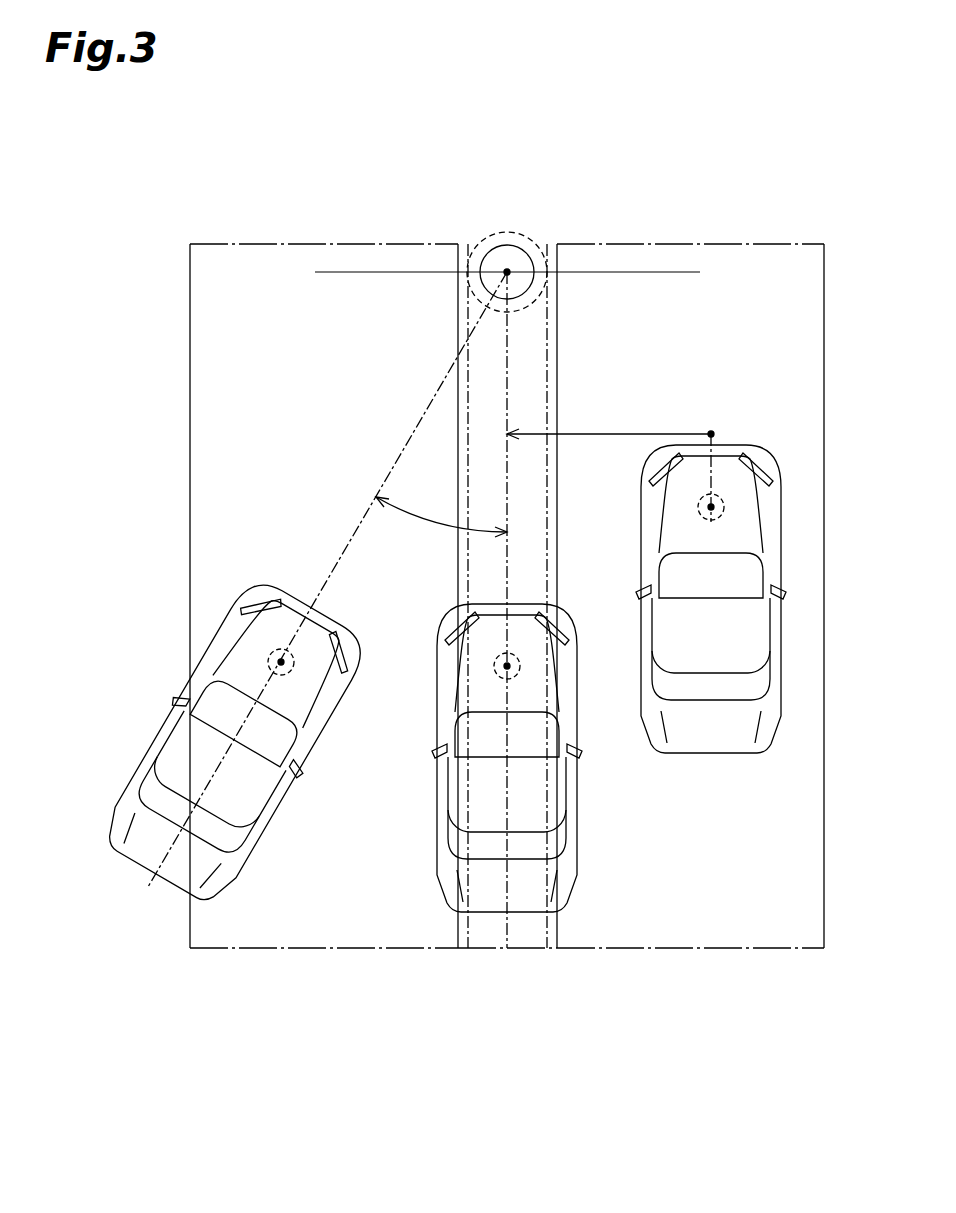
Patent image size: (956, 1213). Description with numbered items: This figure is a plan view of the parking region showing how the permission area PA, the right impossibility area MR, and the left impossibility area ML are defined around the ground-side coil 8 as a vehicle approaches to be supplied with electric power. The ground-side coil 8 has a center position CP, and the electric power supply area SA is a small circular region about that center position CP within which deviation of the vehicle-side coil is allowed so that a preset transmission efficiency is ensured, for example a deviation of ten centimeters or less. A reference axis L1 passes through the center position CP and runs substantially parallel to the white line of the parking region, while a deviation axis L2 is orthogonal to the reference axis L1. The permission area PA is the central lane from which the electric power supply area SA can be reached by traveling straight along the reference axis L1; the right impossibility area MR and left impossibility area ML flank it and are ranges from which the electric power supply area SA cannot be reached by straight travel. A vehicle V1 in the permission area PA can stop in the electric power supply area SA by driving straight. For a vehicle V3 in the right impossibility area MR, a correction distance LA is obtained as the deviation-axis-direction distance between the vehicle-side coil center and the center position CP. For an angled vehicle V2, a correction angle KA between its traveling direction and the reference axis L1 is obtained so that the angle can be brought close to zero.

The ground-side coil 8 is at (484, 256).
The electric power supply area SA is at (501, 232).
The center position CP is at (513, 266).
The reference axis L1 is at (505, 410).
The deviation axis L2 is at (338, 276).
The correction distance LA is at (618, 430).
The correction angle KA is at (436, 530).
The vehicle V1 is at (436, 688).
The vehicle V2 is at (167, 717).
The vehicle V3 is at (643, 633).
The left impossibility area ML is at (315, 950).
The permission area PA is at (505, 950).
The right impossibility area MR is at (698, 950).